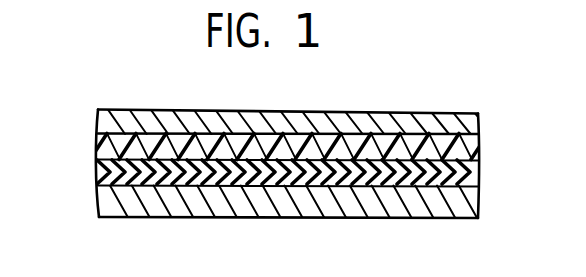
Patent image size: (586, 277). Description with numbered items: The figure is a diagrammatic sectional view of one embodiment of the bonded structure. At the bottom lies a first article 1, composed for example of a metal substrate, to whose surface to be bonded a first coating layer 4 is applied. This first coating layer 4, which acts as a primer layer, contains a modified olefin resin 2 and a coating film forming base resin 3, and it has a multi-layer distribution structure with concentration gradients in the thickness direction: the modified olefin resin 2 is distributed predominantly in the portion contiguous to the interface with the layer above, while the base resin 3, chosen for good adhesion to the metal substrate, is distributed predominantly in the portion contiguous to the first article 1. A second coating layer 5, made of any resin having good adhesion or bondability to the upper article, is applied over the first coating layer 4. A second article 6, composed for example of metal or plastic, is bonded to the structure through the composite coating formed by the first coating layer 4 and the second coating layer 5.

The first article 1 is at (259, 210).
The modified olefin resin 2 is at (97, 161).
The coating film forming base resin 3 is at (97, 172).
The first coating layer 4 is at (492, 174).
The second coating layer 5 is at (92, 145).
The second article 6 is at (392, 118).